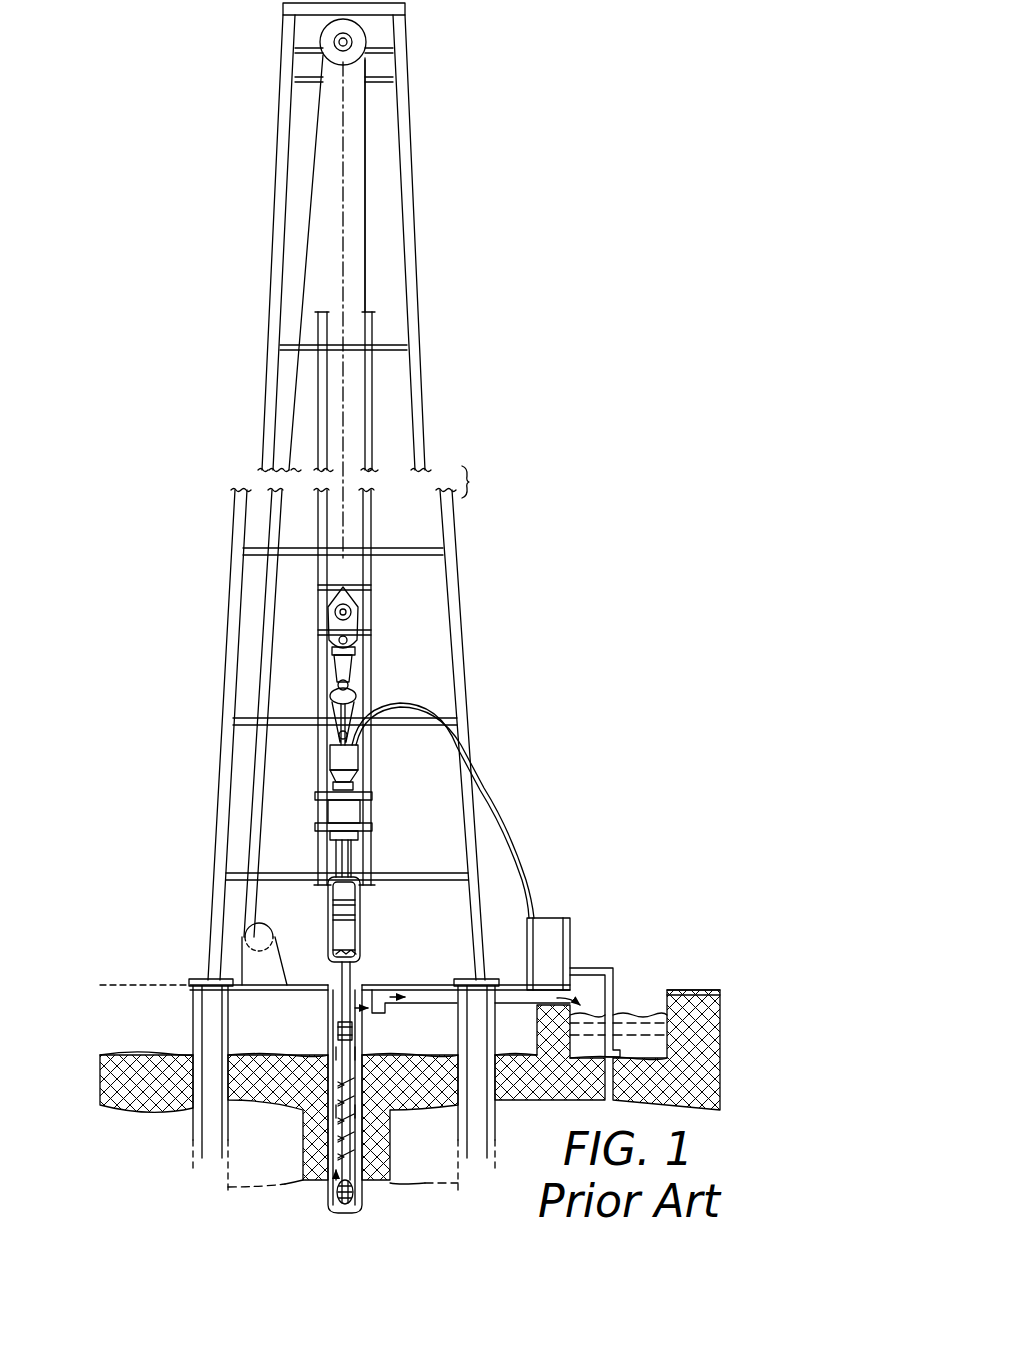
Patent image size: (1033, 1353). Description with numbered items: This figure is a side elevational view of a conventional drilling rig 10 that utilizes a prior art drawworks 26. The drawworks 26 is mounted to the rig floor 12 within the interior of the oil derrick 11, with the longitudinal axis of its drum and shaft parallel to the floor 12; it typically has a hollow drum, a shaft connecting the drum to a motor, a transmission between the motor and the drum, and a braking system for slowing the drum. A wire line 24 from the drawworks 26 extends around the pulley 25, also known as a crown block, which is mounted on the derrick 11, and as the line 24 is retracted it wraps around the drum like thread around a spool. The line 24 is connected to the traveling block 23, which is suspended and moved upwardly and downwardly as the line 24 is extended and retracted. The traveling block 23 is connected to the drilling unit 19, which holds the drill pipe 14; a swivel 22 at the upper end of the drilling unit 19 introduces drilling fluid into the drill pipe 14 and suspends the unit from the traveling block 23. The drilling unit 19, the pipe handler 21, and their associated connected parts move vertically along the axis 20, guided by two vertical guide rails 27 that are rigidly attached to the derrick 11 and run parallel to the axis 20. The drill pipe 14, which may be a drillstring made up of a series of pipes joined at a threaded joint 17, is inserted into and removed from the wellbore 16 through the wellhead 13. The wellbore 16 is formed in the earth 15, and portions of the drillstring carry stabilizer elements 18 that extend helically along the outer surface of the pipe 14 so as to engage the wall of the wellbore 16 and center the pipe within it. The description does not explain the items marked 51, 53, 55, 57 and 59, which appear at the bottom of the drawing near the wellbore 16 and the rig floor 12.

The drilling rig 10 is at (478, 317).
The oil derrick 11 is at (420, 440).
The rig floor 12 is at (510, 986).
The wellhead 13 is at (363, 990).
The drill pipe 14 is at (342, 976).
The earth 15 is at (447, 1057).
The wellbore 16 is at (328, 1150).
The threaded joint 17 is at (352, 1031).
The stabilizer elements 18 is at (345, 1138).
The drilling unit 19 is at (400, 752).
The vertical axis 20 is at (342, 412).
The pipe handler 21 is at (368, 917).
The swivel 22 is at (348, 753).
The traveling block 23 is at (353, 620).
The wire line 24 is at (370, 192).
The pulley 25 is at (360, 50).
The drawworks 26 is at (260, 968).
The vertical guide rails 27 is at (372, 503).
The drill bit 51 is at (352, 1199).
The mud hose 53 is at (506, 826).
The mud tank 55 is at (566, 940).
The discharge pipe 57 is at (614, 981).
The mud pit 59 is at (663, 1050).